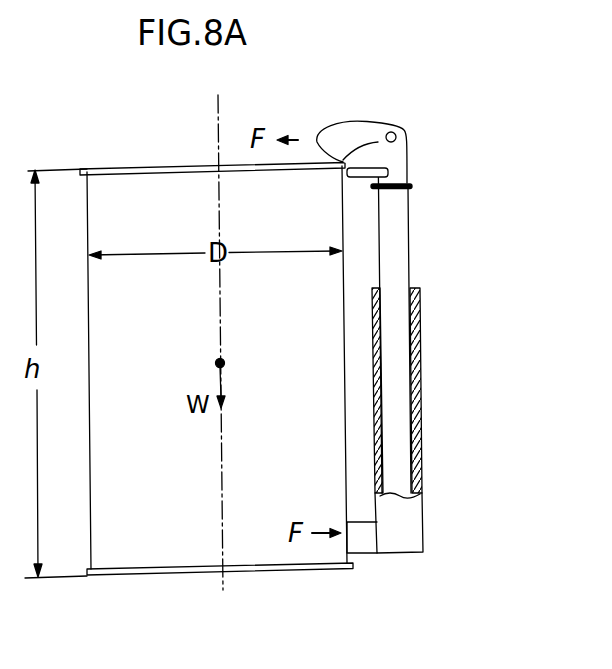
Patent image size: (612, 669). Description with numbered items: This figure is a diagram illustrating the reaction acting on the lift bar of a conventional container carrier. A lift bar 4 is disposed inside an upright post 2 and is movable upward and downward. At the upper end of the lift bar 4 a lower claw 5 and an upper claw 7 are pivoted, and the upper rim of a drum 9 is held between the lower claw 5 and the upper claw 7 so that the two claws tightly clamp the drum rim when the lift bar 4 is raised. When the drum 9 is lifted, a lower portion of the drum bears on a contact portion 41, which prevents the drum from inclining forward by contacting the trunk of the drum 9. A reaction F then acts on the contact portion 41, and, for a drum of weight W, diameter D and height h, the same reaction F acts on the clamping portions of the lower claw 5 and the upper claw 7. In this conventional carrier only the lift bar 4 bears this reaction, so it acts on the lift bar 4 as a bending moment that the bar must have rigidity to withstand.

The post 2 is at (417, 398).
The lift bar 4 is at (400, 262).
The lower claw 5 is at (365, 192).
The upper claw 7 is at (347, 132).
The drum 9 is at (130, 540).
The contact portion 41 is at (368, 540).